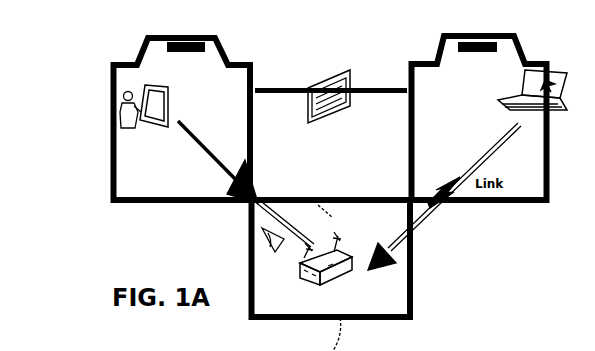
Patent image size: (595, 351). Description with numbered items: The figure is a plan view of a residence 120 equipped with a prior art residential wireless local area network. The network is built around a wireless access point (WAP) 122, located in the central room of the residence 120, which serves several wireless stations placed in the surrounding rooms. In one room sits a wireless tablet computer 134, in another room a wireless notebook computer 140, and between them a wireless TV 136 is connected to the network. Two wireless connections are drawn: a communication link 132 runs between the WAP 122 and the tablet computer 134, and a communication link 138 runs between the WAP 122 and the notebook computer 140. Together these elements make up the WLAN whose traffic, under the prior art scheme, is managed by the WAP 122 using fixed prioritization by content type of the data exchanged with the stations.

The residence 120 is at (141, 204).
The wireless access point (WAP) 122 is at (340, 281).
The communication link 132 is at (199, 134).
The wireless tablet computer 134 is at (183, 84).
The wireless TV 136 is at (350, 70).
The communication link 138 is at (482, 144).
The wireless notebook computer 140 is at (516, 94).